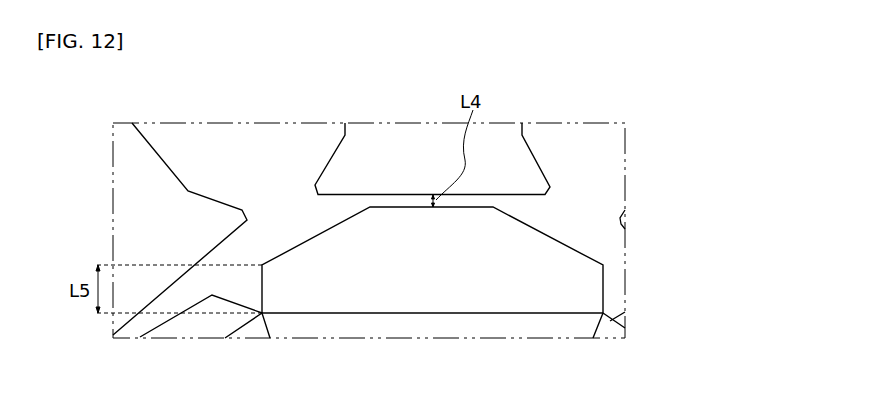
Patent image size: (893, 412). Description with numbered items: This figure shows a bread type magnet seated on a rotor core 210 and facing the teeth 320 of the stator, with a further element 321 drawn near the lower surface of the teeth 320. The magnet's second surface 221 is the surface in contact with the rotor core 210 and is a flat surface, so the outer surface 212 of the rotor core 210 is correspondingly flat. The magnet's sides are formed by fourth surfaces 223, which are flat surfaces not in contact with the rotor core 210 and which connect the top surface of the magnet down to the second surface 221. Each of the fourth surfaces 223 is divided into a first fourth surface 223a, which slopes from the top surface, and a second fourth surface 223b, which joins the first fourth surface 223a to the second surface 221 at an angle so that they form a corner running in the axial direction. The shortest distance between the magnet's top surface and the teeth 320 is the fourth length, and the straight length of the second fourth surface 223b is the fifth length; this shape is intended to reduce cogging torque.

The rotor core 210 is at (302, 331).
The outer surface 212 is at (435, 313).
The second surface 221 is at (545, 307).
The fourth surfaces 223 is at (722, 265).
The first fourth surface 223a is at (575, 247).
The second fourth surface 223b is at (262, 283).
The teeth 320 is at (515, 167).
The bottom surface of upper body 321 is at (344, 195).